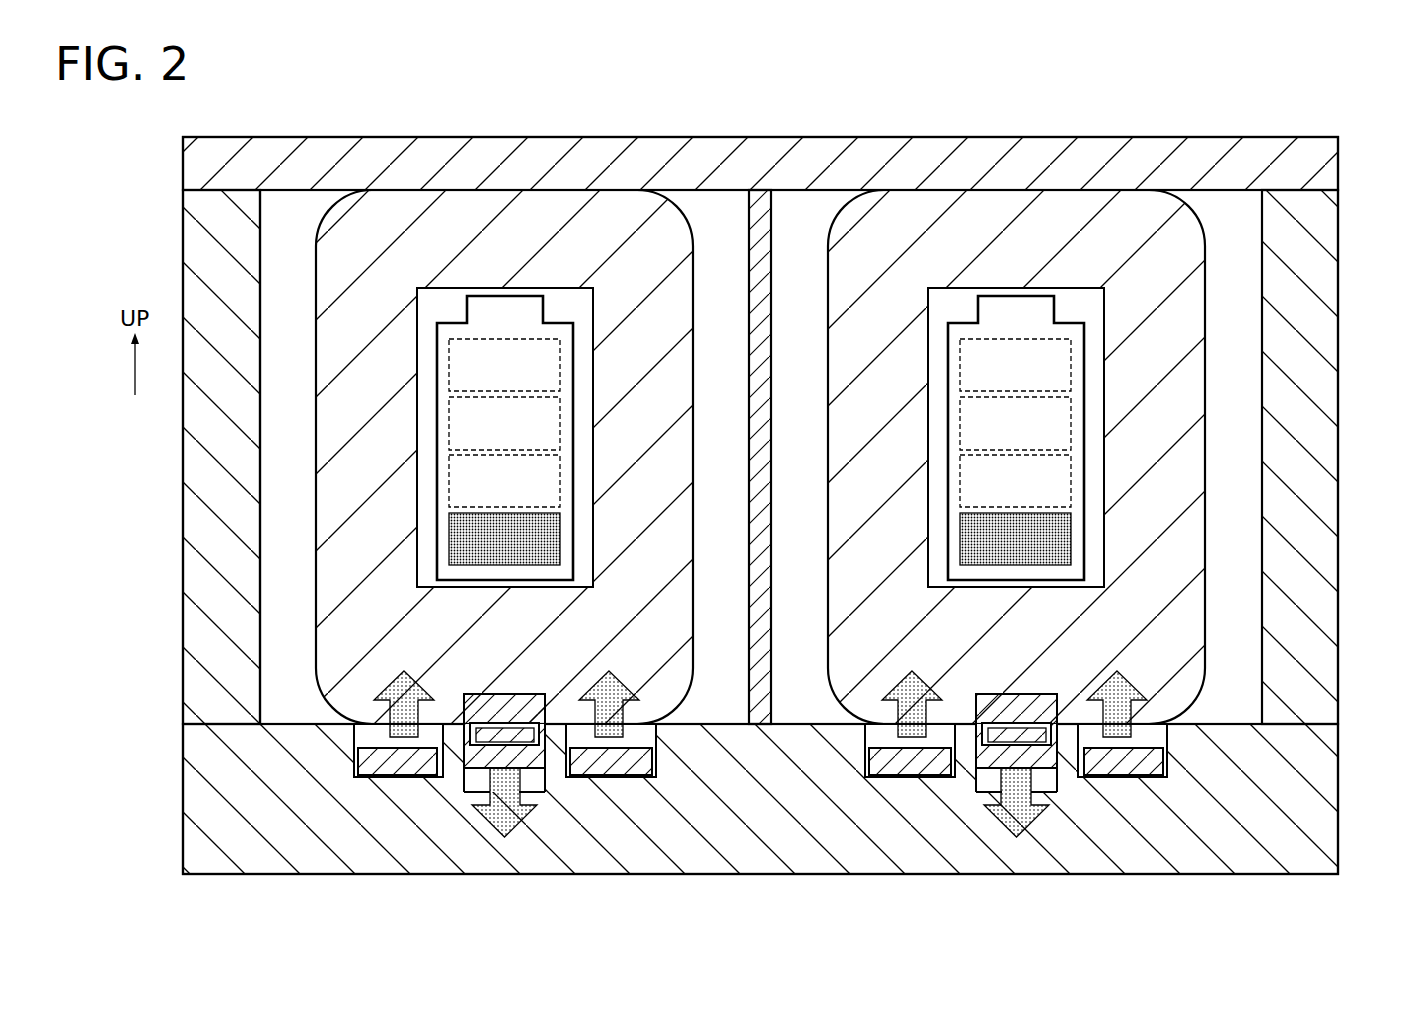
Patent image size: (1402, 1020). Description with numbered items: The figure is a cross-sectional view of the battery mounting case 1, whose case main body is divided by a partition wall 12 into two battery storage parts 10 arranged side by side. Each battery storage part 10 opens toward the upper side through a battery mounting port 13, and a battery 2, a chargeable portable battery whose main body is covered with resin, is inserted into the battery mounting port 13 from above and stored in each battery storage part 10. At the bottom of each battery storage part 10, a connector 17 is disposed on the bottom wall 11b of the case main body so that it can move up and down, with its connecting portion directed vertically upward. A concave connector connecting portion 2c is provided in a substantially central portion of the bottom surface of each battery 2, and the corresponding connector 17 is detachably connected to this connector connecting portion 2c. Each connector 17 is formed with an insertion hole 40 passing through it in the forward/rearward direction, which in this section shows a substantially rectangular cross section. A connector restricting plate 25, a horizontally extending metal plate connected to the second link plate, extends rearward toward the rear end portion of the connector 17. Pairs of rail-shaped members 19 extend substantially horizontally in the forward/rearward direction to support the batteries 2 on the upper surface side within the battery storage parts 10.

The battery mounting case 1 is at (1344, 497).
The battery 2 is at (572, 182).
The connector connecting portion 2c is at (495, 703).
The battery storage part 10 is at (287, 323).
The bottom wall 11b is at (805, 857).
The partition wall 12 is at (749, 630).
The battery mounting port 13 is at (260, 200).
The connector 17 is at (450, 775).
The rail-shaped member 19 is at (395, 770).
The connector restricting plate 25 is at (516, 735).
The insertion hole 40 is at (761, 768).